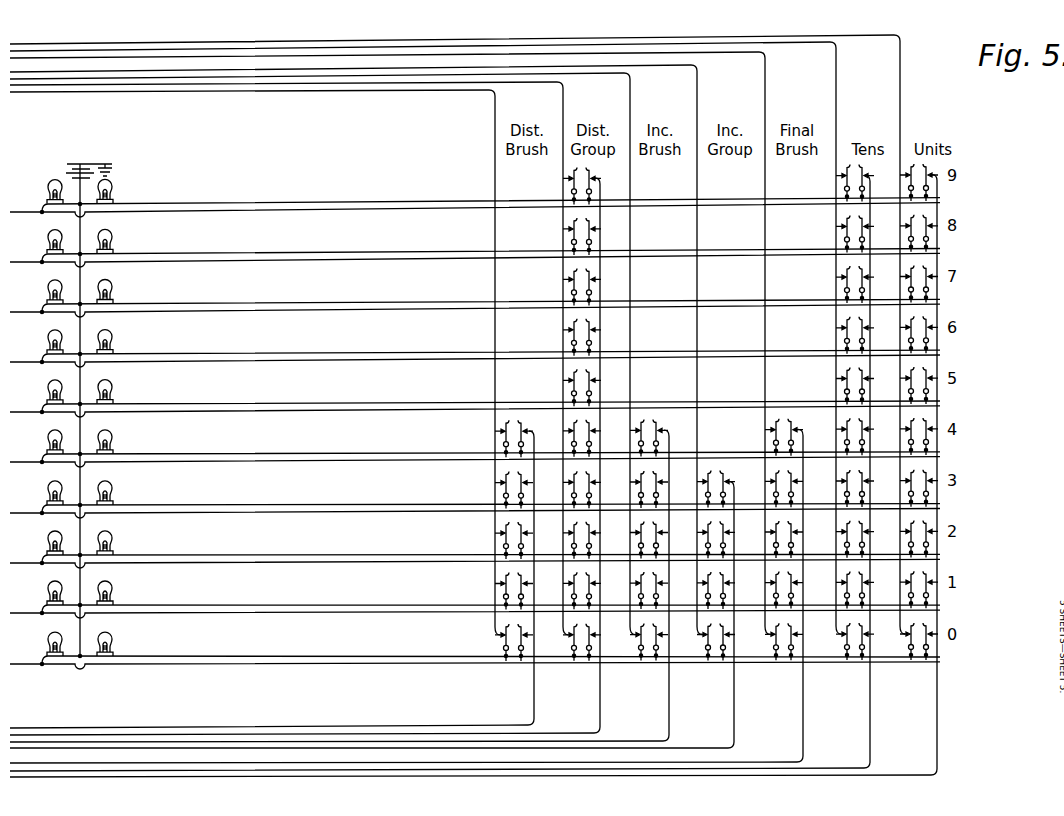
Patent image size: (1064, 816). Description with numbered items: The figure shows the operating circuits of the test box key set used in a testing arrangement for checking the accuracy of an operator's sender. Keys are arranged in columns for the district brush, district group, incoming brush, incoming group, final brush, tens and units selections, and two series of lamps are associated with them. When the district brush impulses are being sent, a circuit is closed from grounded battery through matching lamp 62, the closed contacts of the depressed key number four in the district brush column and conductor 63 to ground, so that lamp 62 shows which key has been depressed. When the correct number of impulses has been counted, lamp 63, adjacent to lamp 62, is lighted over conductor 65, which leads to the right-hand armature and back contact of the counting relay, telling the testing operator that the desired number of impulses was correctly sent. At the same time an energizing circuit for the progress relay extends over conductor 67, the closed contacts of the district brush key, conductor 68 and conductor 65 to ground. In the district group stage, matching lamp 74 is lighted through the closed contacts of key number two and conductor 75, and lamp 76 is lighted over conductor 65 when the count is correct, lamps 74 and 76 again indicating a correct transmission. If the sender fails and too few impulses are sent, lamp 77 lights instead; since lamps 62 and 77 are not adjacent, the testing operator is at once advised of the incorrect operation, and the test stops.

The matching lamp 62 is at (111, 441).
The matching lamp 63 is at (52, 441).
The conductor 65 is at (476, 727).
The conductor 67 is at (494, 124).
The conductor 68 is at (343, 463).
The matching lamp 74 is at (111, 544).
The conductor 75 is at (601, 706).
The lamp 76 is at (52, 543).
The lamp 77 is at (52, 494).